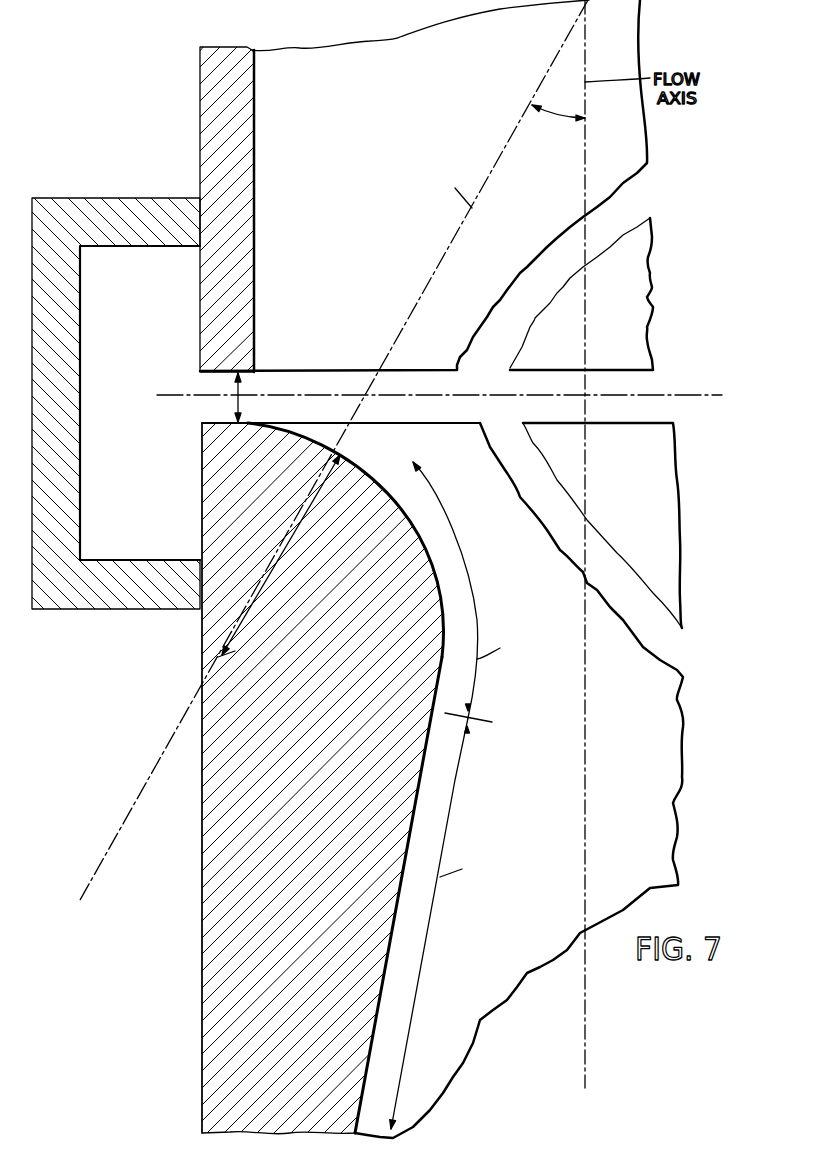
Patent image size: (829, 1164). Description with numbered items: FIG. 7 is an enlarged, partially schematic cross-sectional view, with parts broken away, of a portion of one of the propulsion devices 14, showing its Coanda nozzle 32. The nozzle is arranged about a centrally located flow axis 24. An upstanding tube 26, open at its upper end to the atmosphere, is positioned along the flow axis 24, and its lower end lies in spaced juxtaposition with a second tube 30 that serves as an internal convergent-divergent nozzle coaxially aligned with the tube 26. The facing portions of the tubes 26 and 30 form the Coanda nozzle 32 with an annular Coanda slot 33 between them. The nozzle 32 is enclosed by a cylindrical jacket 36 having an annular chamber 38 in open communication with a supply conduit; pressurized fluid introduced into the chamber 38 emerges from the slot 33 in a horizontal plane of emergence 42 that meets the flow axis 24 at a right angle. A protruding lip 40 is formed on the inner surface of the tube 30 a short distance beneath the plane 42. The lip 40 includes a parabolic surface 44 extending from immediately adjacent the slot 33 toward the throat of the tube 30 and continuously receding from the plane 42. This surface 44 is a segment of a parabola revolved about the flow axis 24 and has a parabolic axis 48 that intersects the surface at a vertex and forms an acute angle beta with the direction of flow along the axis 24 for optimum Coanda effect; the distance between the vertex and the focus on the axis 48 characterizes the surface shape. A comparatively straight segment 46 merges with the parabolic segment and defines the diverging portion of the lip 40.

The propulsion device 14 is at (399, 187).
The upstanding tube 26 is at (200, 130).
The cylindrical jacket 36 is at (100, 609).
The annular chamber 38 is at (139, 323).
The Coanda slot 33 is at (198, 409).
The Coanda nozzle 32 is at (361, 778).
The second tube 30 is at (361, 778).
The protruding lip 40 is at (202, 888).
The parabolic surface 44 is at (425, 518).
The straight segment 46 is at (409, 840).
The parabolic axis 48 is at (392, 350).
The plane of emergence 42 is at (653, 395).
The flow axis 24 is at (585, 463).